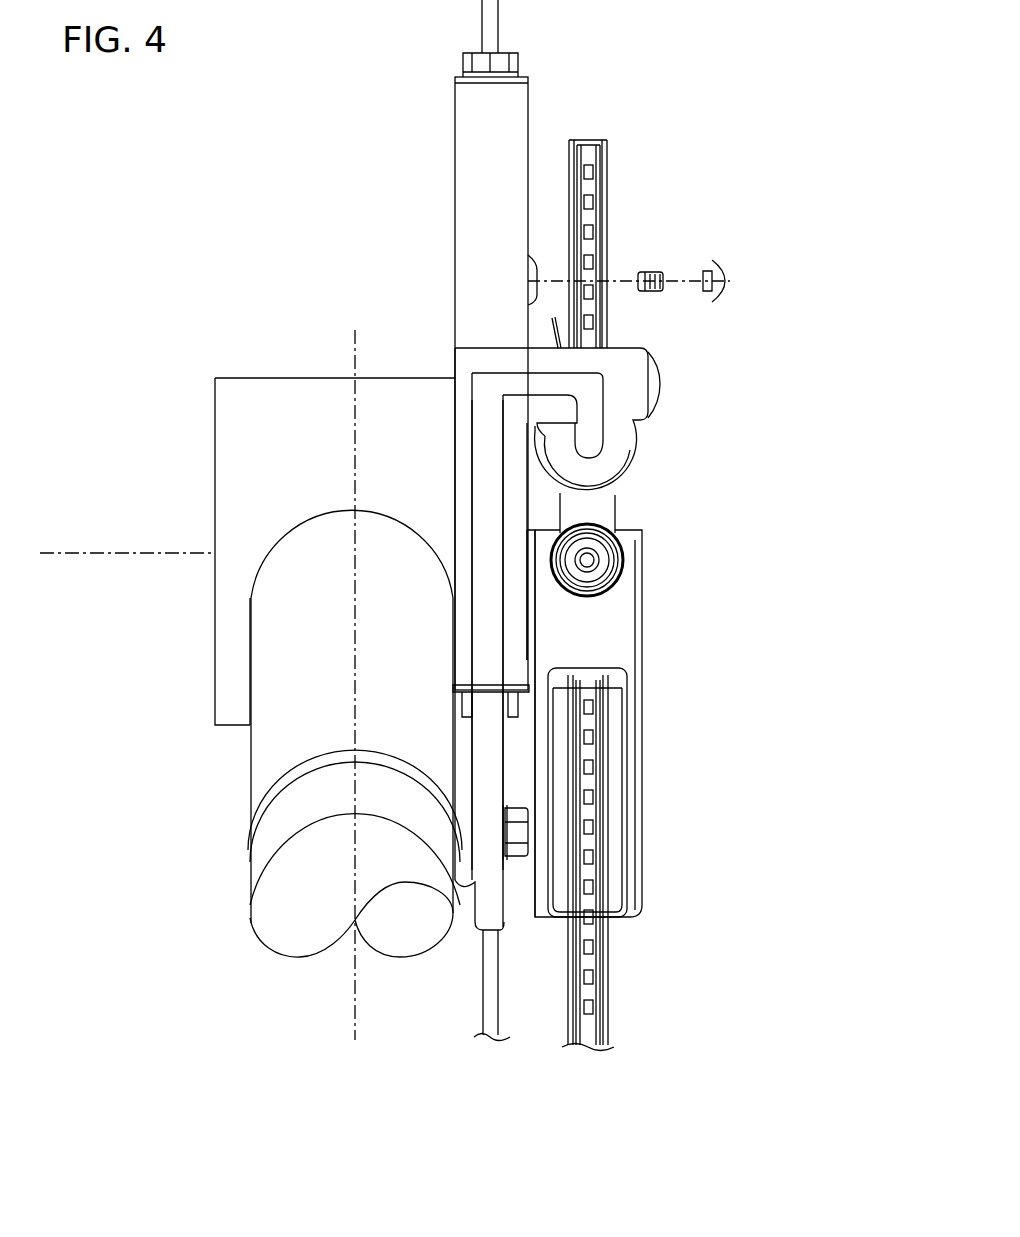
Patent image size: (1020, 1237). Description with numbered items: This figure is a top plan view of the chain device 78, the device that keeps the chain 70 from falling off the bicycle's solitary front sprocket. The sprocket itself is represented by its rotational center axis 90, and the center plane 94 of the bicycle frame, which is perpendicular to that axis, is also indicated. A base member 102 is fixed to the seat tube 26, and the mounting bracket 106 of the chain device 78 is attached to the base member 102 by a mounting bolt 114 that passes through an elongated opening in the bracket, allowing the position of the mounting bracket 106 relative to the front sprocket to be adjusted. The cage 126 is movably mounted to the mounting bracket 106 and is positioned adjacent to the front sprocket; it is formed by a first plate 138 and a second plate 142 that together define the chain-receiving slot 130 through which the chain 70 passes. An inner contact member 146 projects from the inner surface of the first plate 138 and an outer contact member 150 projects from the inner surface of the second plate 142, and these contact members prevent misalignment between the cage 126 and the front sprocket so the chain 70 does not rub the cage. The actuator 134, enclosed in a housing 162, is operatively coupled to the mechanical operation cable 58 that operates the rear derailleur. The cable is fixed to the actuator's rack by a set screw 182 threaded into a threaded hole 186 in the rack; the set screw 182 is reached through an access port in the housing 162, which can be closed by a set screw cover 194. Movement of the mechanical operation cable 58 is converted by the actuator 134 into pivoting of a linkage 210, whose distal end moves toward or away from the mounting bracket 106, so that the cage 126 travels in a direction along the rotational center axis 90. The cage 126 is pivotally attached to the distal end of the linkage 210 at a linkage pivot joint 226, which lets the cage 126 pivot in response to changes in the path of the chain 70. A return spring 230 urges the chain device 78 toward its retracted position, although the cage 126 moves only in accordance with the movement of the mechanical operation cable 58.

The seat tube 26 is at (280, 912).
The mechanical operation cable 58 is at (488, 12).
The chain 70 is at (572, 1030).
The chain device 78 is at (697, 78).
The rotational center axis 90 is at (72, 550).
The center plane 94 is at (352, 998).
The base member 102 is at (258, 790).
The mounting bracket 106 is at (486, 758).
The mounting bolt 114 is at (505, 823).
The cage 126 is at (626, 605).
The chain-receiving slot 130 is at (620, 736).
The actuator 134 is at (393, 263).
The first plate 138 is at (540, 690).
The second plate 142 is at (645, 893).
The inner contact member 146 is at (562, 918).
The outer contact member 150 is at (614, 917).
The housing 162 is at (470, 242).
The set screw 182 is at (648, 270).
The threaded hole 186 is at (536, 255).
The set screw cover 194 is at (720, 270).
The linkage 210 is at (598, 512).
The linkage pivot joint 226 is at (600, 565).
The return spring 230 is at (553, 342).